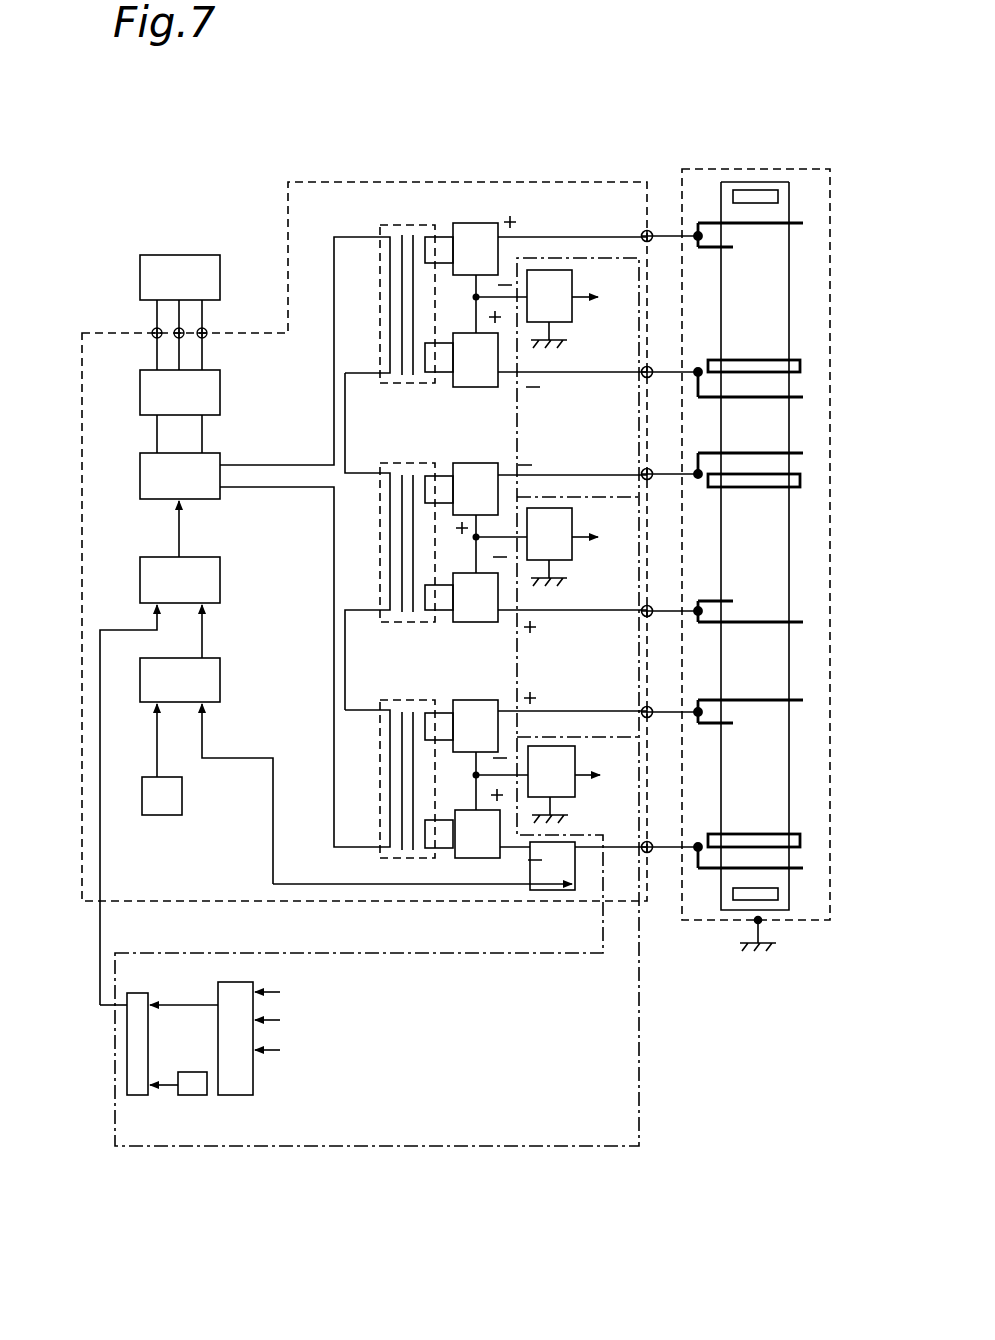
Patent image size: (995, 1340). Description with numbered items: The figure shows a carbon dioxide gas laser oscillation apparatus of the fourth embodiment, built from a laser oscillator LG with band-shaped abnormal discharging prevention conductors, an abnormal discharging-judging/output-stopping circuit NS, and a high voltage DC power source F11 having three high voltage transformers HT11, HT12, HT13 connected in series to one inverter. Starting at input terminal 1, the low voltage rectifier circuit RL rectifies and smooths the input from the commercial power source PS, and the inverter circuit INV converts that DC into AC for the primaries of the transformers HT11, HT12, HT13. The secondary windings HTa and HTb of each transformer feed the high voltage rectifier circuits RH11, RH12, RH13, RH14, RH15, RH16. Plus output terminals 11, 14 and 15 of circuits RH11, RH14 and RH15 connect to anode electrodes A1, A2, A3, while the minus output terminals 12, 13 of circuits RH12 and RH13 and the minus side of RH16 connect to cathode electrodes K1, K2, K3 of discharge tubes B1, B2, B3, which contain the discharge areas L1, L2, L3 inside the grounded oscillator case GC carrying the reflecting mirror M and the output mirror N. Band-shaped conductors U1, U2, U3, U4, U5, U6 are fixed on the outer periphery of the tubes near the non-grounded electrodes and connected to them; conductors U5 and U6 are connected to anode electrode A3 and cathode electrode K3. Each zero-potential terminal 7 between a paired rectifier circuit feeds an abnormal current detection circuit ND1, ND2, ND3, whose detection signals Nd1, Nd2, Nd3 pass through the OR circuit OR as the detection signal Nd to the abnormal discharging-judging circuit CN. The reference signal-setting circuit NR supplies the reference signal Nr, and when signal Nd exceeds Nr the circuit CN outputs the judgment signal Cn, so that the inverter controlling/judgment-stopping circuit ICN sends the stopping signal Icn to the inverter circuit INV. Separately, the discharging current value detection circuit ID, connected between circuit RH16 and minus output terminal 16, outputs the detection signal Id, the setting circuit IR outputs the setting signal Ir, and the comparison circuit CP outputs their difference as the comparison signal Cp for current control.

The commercial power source PS is at (180, 253).
The input terminal 1 is at (208, 333).
The low voltage rectifier circuit RL is at (220, 397).
The inverter circuit INV is at (220, 454).
The inverter controlling/judgment-stopping signal Icn is at (180, 536).
The inverter controlling/judgment-stopping circuit ICN is at (220, 578).
The discharging current value comparison signal Cp is at (203, 640).
The discharging current value comparison circuit CP is at (220, 680).
The discharging current value setting signal Ir is at (157, 748).
The discharging current value setting circuit IR is at (162, 815).
The discharging current value detection signal Id is at (203, 745).
The abnormal discharging judgment signal Cn is at (100, 925).
The abnormal discharging-judging/output-stopping circuit NS is at (425, 1149).
The abnormal discharging-judging circuit CN is at (142, 1096).
The abnormal discharging judgment reference signal-setting circuit NR is at (194, 1096).
The OR circuit OR is at (240, 1096).
The abnormal discharging detection signal Nd is at (167, 1003).
The abnormal discharging judgment reference signal Nr is at (166, 1080).
The abnormal current detection signal Nd1 is at (439, 652).
The abnormal current detection signal Nd2 is at (439, 786).
The abnormal current detection signal Nd3 is at (439, 920).
The high voltage DC power source F11 is at (486, 180).
The high voltage transformer HT11 is at (412, 222).
The high voltage transformer HT12 is at (411, 462).
The high voltage transformer HT13 is at (408, 698).
The secondary winding HTa is at (432, 252).
The secondary winding HTb is at (434, 372).
The high voltage rectifier circuit RH11 is at (487, 240).
The high voltage rectifier circuit RH12 is at (494, 385).
The high voltage rectifier circuit RH13 is at (505, 478).
The high voltage rectifier circuit RH14 is at (494, 622).
The high voltage rectifier circuit RH15 is at (505, 715).
The high voltage rectifier circuit RH16 is at (480, 858).
The zero-potential terminal 7 is at (474, 298).
The abnormal current detection circuit ND1 is at (550, 282).
The abnormal current detection circuit ND2 is at (550, 520).
The abnormal current detection circuit ND3 is at (550, 758).
The discharging current value detection circuit ID is at (573, 893).
The plus output terminal 11 is at (648, 229).
The minus output terminal 12 is at (648, 366).
The output terminal 13 is at (648, 467).
The plus output terminal 14 is at (648, 605).
The plus output terminal 15 is at (648, 706).
The minus output terminal 16 is at (648, 841).
The oscillator case GC is at (812, 926).
The laser oscillator LG is at (705, 932).
The discharge tube B1 is at (790, 318).
The discharge tube B2 is at (790, 532).
The discharge tube B3 is at (790, 792).
The discharge area L1 is at (753, 298).
The discharge area L2 is at (753, 538).
The discharge area L3 is at (753, 778).
The reflecting mirror M is at (779, 197).
The output mirror N is at (790, 905).
The abnormal discharging prevention conductor U1 is at (808, 219).
The abnormal discharging prevention conductor U2 is at (808, 624).
The abnormal discharging prevention conductor U3 is at (808, 399).
The abnormal discharging prevention conductor U4 is at (808, 455).
The abnormal discharging prevention conductor U5 is at (808, 700).
The abnormal discharging prevention conductor U6 is at (808, 870).
The anode electrode A1 is at (740, 250).
The anode electrode A2 is at (740, 600).
The anode electrode A3 is at (740, 726).
The cathode electrode K1 is at (805, 361).
The cathode electrode K2 is at (805, 478).
The cathode electrode K3 is at (805, 842).